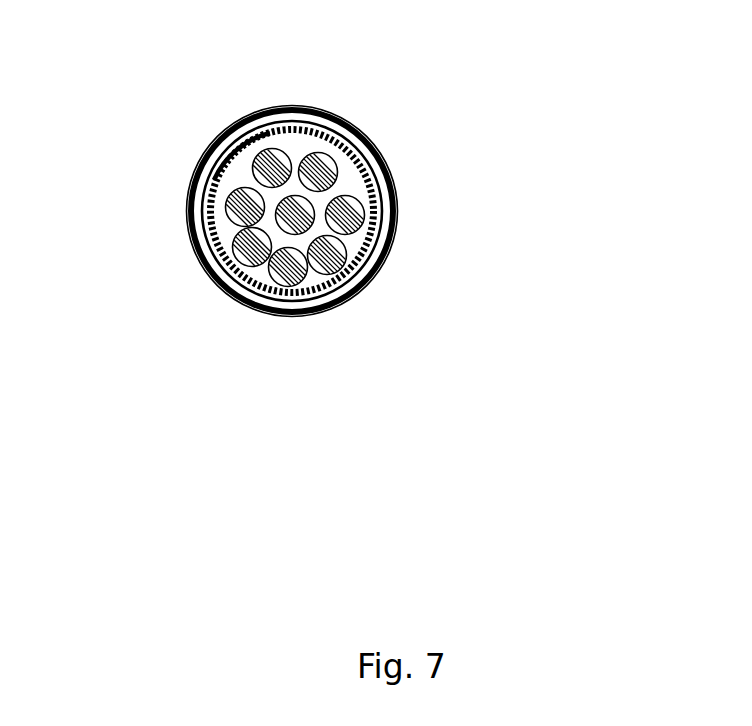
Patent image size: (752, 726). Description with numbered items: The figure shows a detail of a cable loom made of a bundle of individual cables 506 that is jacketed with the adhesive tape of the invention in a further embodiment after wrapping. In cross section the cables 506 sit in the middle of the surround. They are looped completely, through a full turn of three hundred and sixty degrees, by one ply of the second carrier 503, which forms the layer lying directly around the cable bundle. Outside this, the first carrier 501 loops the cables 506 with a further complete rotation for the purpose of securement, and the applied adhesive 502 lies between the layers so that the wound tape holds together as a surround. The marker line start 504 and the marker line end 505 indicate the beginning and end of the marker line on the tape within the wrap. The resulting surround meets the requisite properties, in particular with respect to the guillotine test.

The first carrier 501 is at (355, 112).
The applied adhesive 502 is at (391, 168).
The second carrier 503 is at (296, 119).
The marker line start 504 is at (214, 173).
The marker line end 505 is at (184, 174).
The cable 506 is at (342, 259).